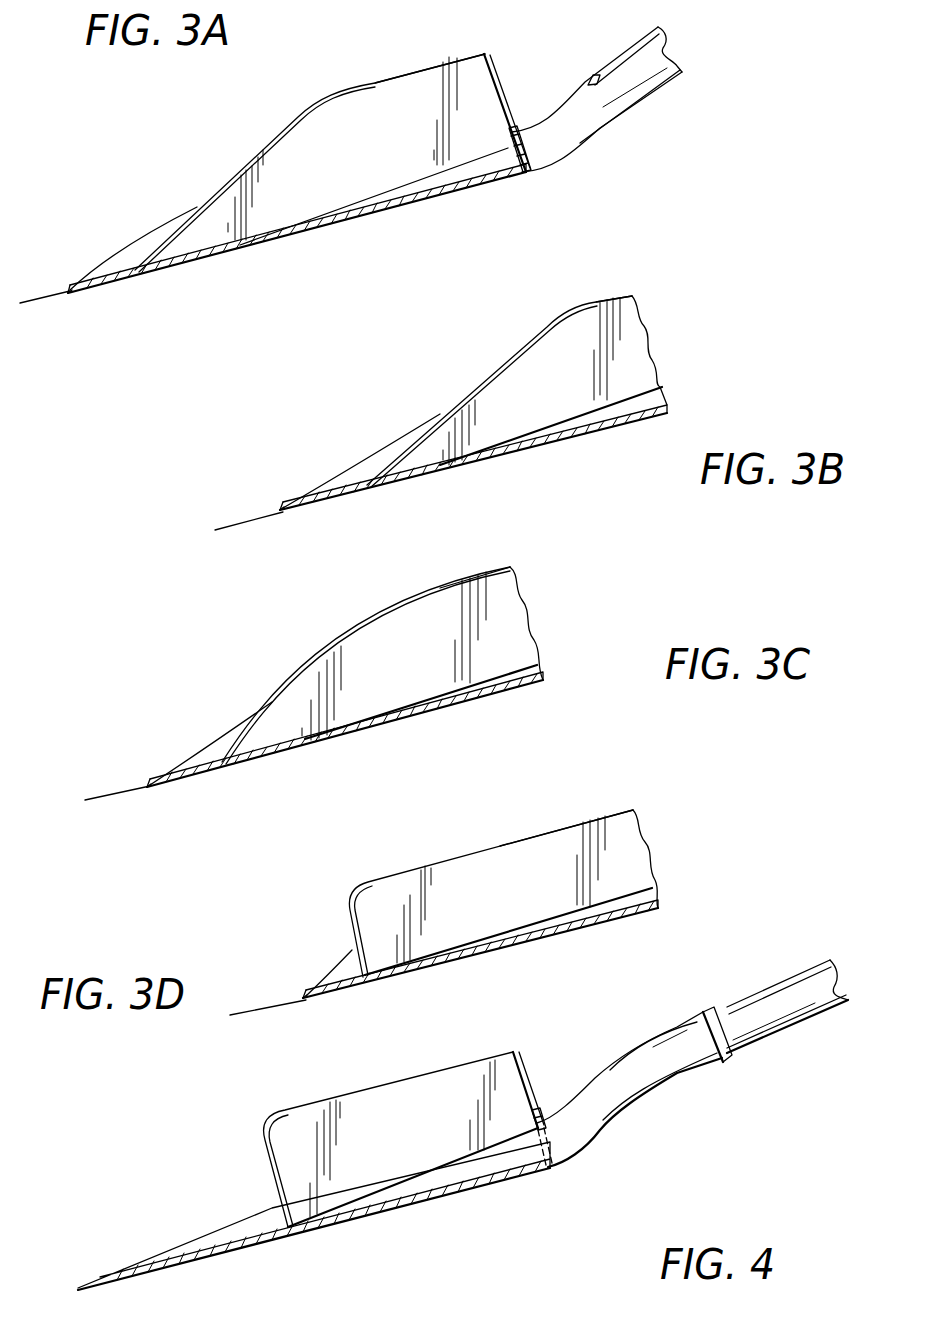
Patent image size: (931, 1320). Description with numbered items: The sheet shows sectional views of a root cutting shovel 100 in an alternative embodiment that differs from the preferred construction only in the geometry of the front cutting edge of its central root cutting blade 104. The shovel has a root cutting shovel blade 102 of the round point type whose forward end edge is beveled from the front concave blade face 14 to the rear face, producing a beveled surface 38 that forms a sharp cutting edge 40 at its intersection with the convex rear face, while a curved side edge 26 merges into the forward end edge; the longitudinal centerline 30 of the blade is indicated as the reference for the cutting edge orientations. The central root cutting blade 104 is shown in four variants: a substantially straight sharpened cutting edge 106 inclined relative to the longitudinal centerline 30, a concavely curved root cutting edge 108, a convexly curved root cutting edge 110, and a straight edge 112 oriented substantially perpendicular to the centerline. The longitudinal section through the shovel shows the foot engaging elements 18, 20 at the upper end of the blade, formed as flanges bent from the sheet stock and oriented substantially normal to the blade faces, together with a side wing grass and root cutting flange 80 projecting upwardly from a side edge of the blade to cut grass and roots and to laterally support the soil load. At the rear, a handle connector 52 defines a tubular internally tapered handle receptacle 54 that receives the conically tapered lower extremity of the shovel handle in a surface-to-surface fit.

In FIG. 4, the front concave blade face 14 is at (385, 1205).
In FIG. 4, the foot engaging element 18 is at (520, 1067).
In FIG. 3A, the foot engaging element 20 is at (524, 148).
In FIG. 4, the foot engaging element 20 is at (540, 1112).
In FIG. 3A, the curved side edge 26 is at (107, 257).
In FIG. 3B, the curved side edge 26 is at (328, 472).
In FIG. 3C, the curved side edge 26 is at (186, 740).
In FIG. 3D, the curved side edge 26 is at (318, 975).
In FIG. 3A, the longitudinal centerline 30 is at (30, 303).
In FIG. 3B, the longitudinal centerline 30 is at (230, 528).
In FIG. 3C, the longitudinal centerline 30 is at (96, 807).
In FIG. 3D, the longitudinal centerline 30 is at (244, 1013).
In FIG. 3A, the beveled surface 38 is at (73, 285).
In FIG. 3B, the beveled surface 38 is at (278, 505).
In FIG. 3C, the beveled surface 38 is at (146, 780).
In FIG. 3D, the beveled surface 38 is at (300, 995).
In FIG. 3A, the sharp cutting edge 40 is at (70, 294).
In FIG. 3B, the sharp cutting edge 40 is at (278, 513).
In FIG. 3C, the sharp cutting edge 40 is at (144, 790).
In FIG. 3D, the sharp cutting edge 40 is at (300, 1002).
In FIG. 4, the handle connector 52 is at (624, 1107).
In FIG. 3A, the handle receptacle 54 is at (650, 80).
In FIG. 4, the handle receptacle 54 is at (708, 1057).
In FIG. 4, the side wing grass and root cutting flange 80 is at (428, 1082).
In FIG. 3A, the shovel 100 is at (363, 74).
In FIG. 3B, the shovel 100 is at (552, 300).
In FIG. 3C, the shovel 100 is at (434, 578).
In FIG. 3D, the shovel 100 is at (513, 818).
In FIG. 3A, the root cutting shovel blade 102 is at (148, 243).
In FIG. 3B, the root cutting shovel blade 102 is at (388, 447).
In FIG. 3C, the root cutting shovel blade 102 is at (238, 722).
In FIG. 3D, the root cutting shovel blade 102 is at (345, 965).
In FIG. 3A, the central root cutting blade 104 is at (478, 98).
In FIG. 3B, the central root cutting blade 104 is at (638, 340).
In FIG. 3C, the central root cutting blade 104 is at (514, 622).
In FIG. 3D, the central root cutting blade 104 is at (628, 852).
In FIG. 3A, the sharpened cutting edge 106 is at (240, 166).
In FIG. 3B, the concavely curved root cutting edge 108 is at (478, 388).
In FIG. 3C, the convexly curved root cutting edge 110 is at (334, 646).
In FIG. 3D, the perpendicular straight cutting edge 112 is at (345, 905).